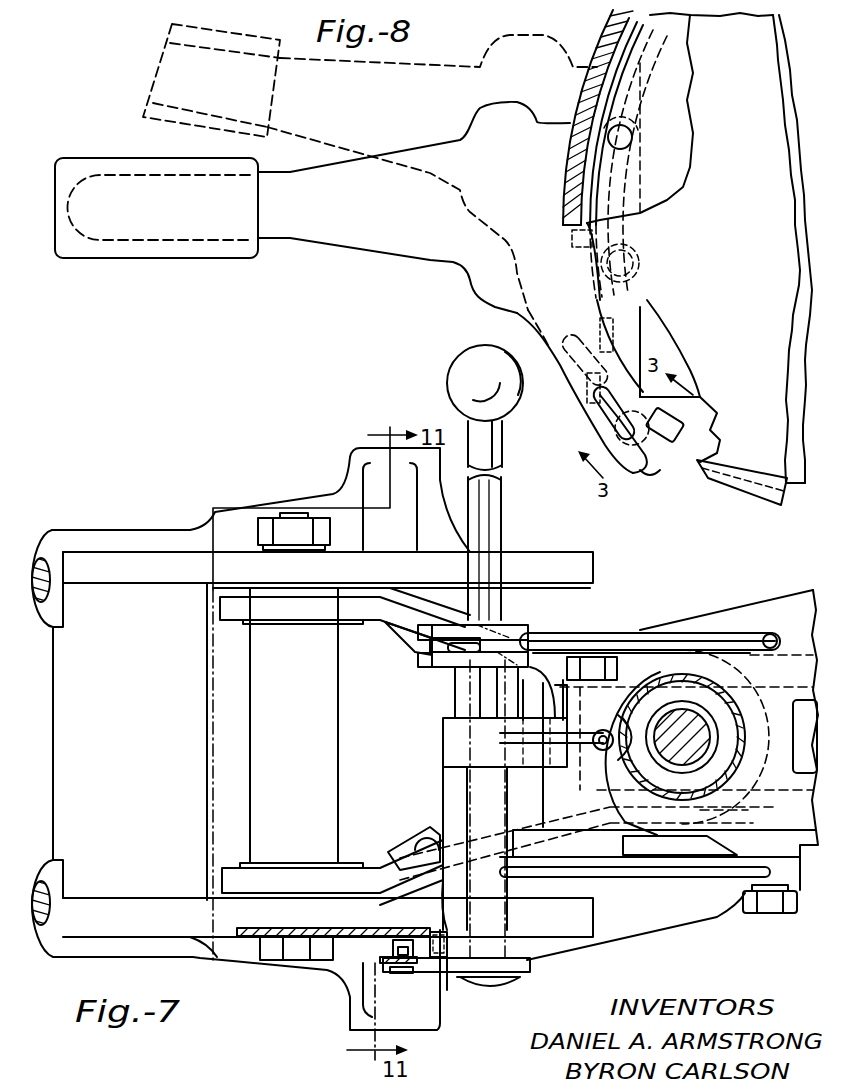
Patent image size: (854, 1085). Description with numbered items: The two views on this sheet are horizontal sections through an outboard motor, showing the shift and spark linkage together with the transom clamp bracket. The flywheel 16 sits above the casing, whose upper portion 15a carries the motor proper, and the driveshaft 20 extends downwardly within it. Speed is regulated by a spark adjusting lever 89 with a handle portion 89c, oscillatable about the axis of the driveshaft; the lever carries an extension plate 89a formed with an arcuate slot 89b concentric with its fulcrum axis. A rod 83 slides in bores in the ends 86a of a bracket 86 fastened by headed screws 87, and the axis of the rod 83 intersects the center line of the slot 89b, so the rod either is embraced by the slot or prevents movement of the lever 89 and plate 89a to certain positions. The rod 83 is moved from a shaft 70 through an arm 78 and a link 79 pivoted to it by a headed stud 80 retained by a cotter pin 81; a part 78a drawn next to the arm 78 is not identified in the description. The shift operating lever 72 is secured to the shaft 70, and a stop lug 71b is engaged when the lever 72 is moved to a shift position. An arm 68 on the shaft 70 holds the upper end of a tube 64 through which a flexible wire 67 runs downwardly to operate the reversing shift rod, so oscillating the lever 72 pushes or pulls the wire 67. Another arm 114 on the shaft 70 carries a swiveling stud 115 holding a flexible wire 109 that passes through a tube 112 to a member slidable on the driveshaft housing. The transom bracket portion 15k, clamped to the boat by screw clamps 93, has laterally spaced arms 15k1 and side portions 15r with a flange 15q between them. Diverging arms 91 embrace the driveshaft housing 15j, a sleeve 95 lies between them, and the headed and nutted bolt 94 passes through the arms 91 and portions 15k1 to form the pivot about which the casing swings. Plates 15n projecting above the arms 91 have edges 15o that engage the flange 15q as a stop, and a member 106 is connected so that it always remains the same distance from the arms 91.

In FIG. 8, the flywheel 16 is at (607, 37).
In FIG. 8, the headed screws 87 is at (625, 318).
In FIG. 8, the bracket 86 is at (630, 345).
In FIG. 8, the upper portion of casing 15a is at (670, 351).
In FIG. 8, the extension plate 89a is at (553, 347).
In FIG. 8, the shift operating lever 72 is at (467, 423).
In FIG. 8, the arcuate slot 89b is at (598, 405).
In FIG. 8, the rod 83 is at (653, 467).
In FIG. 8, the ends of bracket 86a is at (658, 455).
In FIG. 8, the lever 89 is at (403, 248).
In FIG. 8, the handle portion 89c is at (200, 250).
In FIG. 8, the shaft 70 is at (500, 520).
In FIG. 7, the shaft 70 is at (458, 794).
In FIG. 7, the arms 15k1 is at (358, 448).
In FIG. 7, the portion 15k is at (118, 597).
In FIG. 7, the screw clamps 93 is at (55, 597).
In FIG. 7, the side portions 15r is at (170, 580).
In FIG. 7, the plates 15n is at (307, 623).
In FIG. 7, the edges 15o is at (240, 624).
In FIG. 7, the arms 91 is at (385, 614).
In FIG. 7, the arm 114 is at (418, 664).
In FIG. 7, the swiveling stud 115 is at (442, 672).
In FIG. 7, the member 106 is at (447, 593).
In FIG. 7, the flexible wire 109 is at (517, 622).
In FIG. 7, the driveshaft housing 15j is at (647, 687).
In FIG. 7, the tube 112 is at (737, 636).
In FIG. 7, the arm 68 is at (447, 730).
In FIG. 7, the flexible wire 67 is at (612, 728).
In FIG. 7, the driveshaft 20 is at (697, 730).
In FIG. 7, the flange 15q is at (185, 718).
In FIG. 7, the sleeve 95 is at (333, 778).
In FIG. 7, the tube 64 is at (620, 775).
In FIG. 7, the stop lug 71b is at (437, 927).
In FIG. 7, the clip 78a is at (447, 943).
In FIG. 7, the arm 78 is at (533, 964).
In FIG. 7, the cotter pin 81 is at (393, 948).
In FIG. 7, the headed and nutted bolt 94 is at (288, 960).
In FIG. 7, the link 79 is at (417, 982).
In FIG. 7, the headed stud 80 is at (447, 1023).